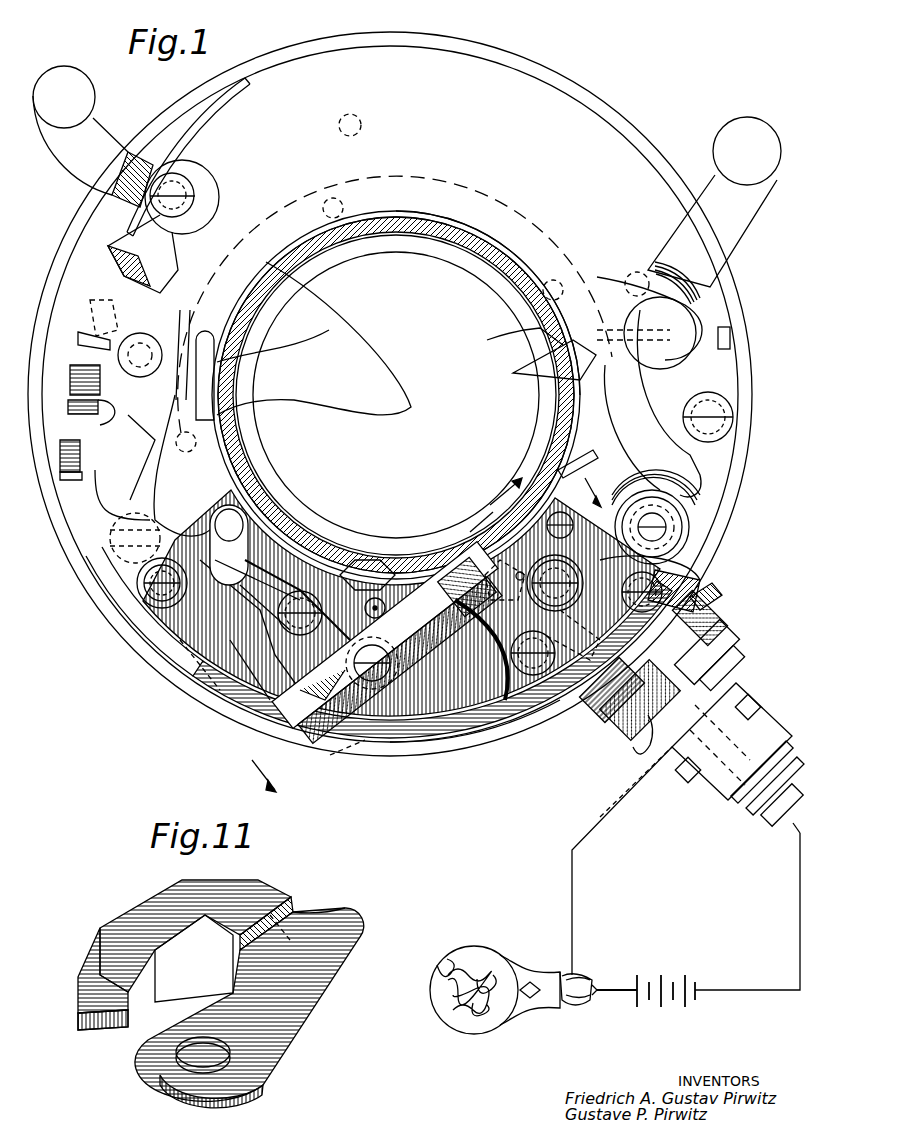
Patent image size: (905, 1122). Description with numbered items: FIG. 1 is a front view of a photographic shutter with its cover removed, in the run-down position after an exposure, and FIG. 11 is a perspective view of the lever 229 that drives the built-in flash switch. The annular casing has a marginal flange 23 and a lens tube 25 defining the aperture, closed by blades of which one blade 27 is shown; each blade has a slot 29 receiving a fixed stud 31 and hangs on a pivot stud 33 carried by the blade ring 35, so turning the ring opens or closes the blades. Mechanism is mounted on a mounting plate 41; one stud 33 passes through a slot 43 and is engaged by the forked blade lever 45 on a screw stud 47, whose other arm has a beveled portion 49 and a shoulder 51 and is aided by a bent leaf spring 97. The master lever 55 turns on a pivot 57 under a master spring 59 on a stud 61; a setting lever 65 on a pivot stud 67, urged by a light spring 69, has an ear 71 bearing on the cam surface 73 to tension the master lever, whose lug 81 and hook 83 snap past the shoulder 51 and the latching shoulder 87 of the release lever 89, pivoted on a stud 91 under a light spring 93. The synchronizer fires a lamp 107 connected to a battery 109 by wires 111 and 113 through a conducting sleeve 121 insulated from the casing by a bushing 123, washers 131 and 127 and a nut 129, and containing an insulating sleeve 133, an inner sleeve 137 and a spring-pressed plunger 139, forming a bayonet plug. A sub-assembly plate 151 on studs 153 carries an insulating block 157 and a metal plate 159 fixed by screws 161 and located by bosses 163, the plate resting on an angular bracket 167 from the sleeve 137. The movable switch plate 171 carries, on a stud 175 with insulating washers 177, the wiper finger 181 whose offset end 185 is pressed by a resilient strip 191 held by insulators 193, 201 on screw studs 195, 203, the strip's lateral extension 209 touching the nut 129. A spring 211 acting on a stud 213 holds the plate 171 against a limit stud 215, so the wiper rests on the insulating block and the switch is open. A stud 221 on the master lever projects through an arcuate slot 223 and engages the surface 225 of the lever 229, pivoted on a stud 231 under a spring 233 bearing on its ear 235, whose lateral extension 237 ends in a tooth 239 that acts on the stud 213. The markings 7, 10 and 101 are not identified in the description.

In FIG. 1, the section line arrow 7 is at (420, 631).
In FIG. 1, the arrow direction indicator 10 is at (790, 815).
In FIG. 1, the marginal flange 23 is at (596, 100).
In FIG. 1, the lens tube 25 is at (452, 278).
In FIG. 1, the shutter blade 27 is at (348, 400).
In FIG. 1, the slot 29 is at (100, 312).
In FIG. 1, the fixed stud 31 is at (356, 117).
In FIG. 1, the pivot stud 33 is at (344, 207).
In FIG. 1, the blade ring 35 is at (447, 175).
In FIG. 1, the mounting plate 41 is at (213, 157).
In FIG. 1, the slot 43 is at (208, 330).
In FIG. 1, the blade lever 45 is at (174, 465).
In FIG. 1, the screw stud 47 is at (188, 344).
In FIG. 1, the beveled portion 49 is at (84, 365).
In FIG. 1, the shoulder 51 is at (84, 336).
In FIG. 1, the master lever 55 is at (688, 458).
In FIG. 1, the pivot 57 is at (660, 518).
In FIG. 1, the master spring 59 is at (722, 354).
In FIG. 1, the stud 61 is at (720, 408).
In FIG. 1, the setting lever 65 is at (745, 222).
In FIG. 1, the pivot stud 67 is at (662, 325).
In FIG. 1, the light spring 69 is at (560, 458).
In FIG. 1, the ear 71 is at (530, 362).
In FIG. 1, the cam surface 73 is at (505, 338).
In FIG. 1, the lug 81 is at (70, 468).
In FIG. 1, the hook portion 83 is at (86, 418).
In FIG. 1, the latching shoulder 87 is at (122, 262).
In FIG. 1, the release lever 89 is at (90, 140).
In FIG. 1, the pivot stud 91 is at (190, 185).
In FIG. 1, the light spring 93 is at (205, 113).
In FIG. 1, the bent leaf spring 97 is at (117, 516).
In FIG. 1, the edge 101 is at (268, 358).
In FIG. 1, the photoflash lamp 107 is at (496, 962).
In FIG. 1, the battery 109 is at (674, 975).
In FIG. 1, the wire 111 is at (605, 822).
In FIG. 1, the wire 113 is at (800, 896).
In FIG. 1, the metal conducting sleeve 121 is at (727, 690).
In FIG. 1, the insulating bushing 123 is at (672, 692).
In FIG. 1, the metal washer 127 is at (714, 620).
In FIG. 1, the nut 129 is at (650, 752).
In FIG. 1, the metal washer 131 is at (728, 662).
In FIG. 1, the insulating sleeve 133 is at (768, 760).
In FIG. 1, the second metal sleeve 137 is at (758, 720).
In FIG. 1, the plunger 139 is at (762, 800).
In FIG. 1, the sub-assembly mounting plate 151 is at (548, 480).
In FIG. 1, the studs 153 is at (535, 510).
In FIG. 1, the insulating block 157 is at (470, 530).
In FIG. 1, the metal plate 159 is at (545, 570).
In FIG. 1, the screws 161 is at (560, 610).
In FIG. 1, the locating bosses 163 is at (518, 590).
In FIG. 1, the angular bracket 167 is at (716, 602).
In FIG. 1, the switch plate 171 is at (430, 650).
In FIG. 1, the stud 175 is at (400, 660).
In FIG. 1, the insulating sleeves and washers 177 is at (386, 606).
In FIG. 1, the movable contact member 181 is at (405, 648).
In FIG. 1, the offset end 185 is at (335, 748).
In FIG. 1, the metal strip 191 is at (470, 746).
In FIG. 1, the insulating sleeves and washers 193 is at (140, 585).
In FIG. 1, the screw stud 195 is at (150, 605).
In FIG. 1, the insulating sleeves and washers 201 is at (690, 570).
In FIG. 1, the screw stud 203 is at (700, 585).
In FIG. 1, the lateral extension 209 is at (688, 760).
In FIG. 1, the spring 211 is at (393, 746).
In FIG. 1, the stud 213 is at (232, 740).
In FIG. 1, the stud 215 is at (438, 582).
In FIG. 1, the stud 221 is at (240, 715).
In FIG. 1, the arcuate slot 223 is at (262, 610).
In FIG. 1, the surface 225 is at (205, 700).
In FIG. 11, the surface 225 is at (330, 908).
In FIG. 1, the lever 229 is at (225, 545).
In FIG. 11, the lever 229 is at (284, 1045).
In FIG. 1, the pivot stud 231 is at (372, 580).
In FIG. 1, the spring 233 is at (322, 575).
In FIG. 1, the ear 235 is at (185, 672).
In FIG. 11, the ear 235 is at (232, 970).
In FIG. 11, the extension 237 is at (155, 906).
In FIG. 1, the tooth 239 is at (368, 625).
In FIG. 11, the tooth 239 is at (110, 1020).